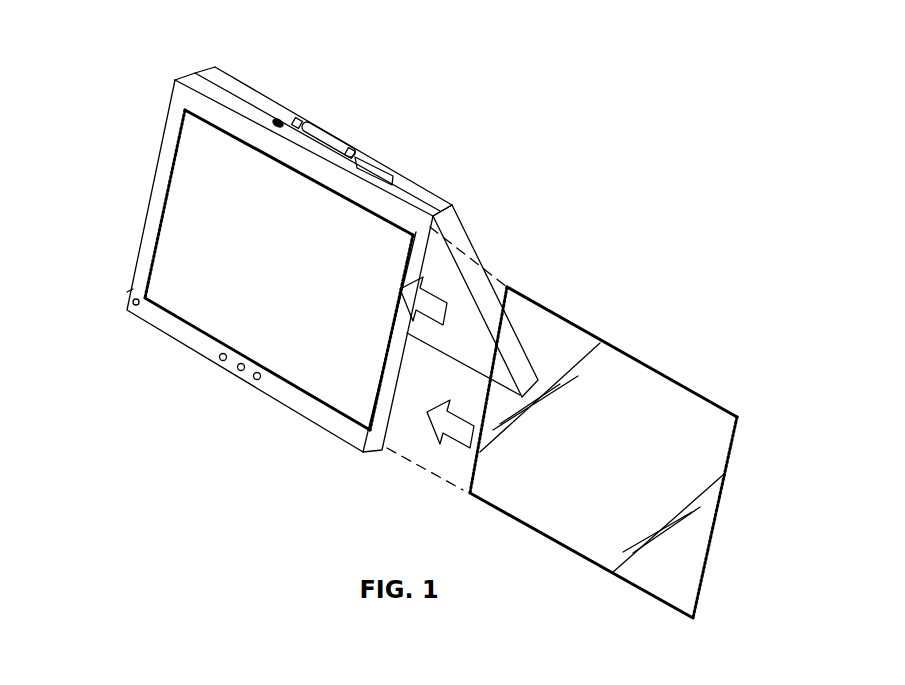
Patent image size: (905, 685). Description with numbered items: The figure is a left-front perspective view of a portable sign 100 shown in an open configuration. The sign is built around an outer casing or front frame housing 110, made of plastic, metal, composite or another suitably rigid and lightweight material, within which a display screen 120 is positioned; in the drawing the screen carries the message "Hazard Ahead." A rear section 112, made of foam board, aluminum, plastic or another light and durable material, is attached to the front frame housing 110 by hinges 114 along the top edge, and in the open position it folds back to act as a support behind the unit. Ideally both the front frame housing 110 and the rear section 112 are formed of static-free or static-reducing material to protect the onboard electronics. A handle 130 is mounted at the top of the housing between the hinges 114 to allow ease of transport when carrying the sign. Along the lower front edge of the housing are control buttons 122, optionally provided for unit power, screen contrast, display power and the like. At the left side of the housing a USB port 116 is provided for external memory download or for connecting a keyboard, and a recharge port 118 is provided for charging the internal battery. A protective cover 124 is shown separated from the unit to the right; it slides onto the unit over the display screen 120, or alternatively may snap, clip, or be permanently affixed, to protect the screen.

The portable sign 100 is at (540, 97).
The front frame housing 110 is at (300, 403).
The rear section 112 is at (478, 248).
The hinges 114 is at (267, 107).
The USB port 116 is at (130, 293).
The recharge port 118 is at (127, 307).
The display screen 120 is at (198, 168).
The control buttons 122 is at (255, 380).
The protective cover 124 is at (657, 365).
The handle 130 is at (327, 128).